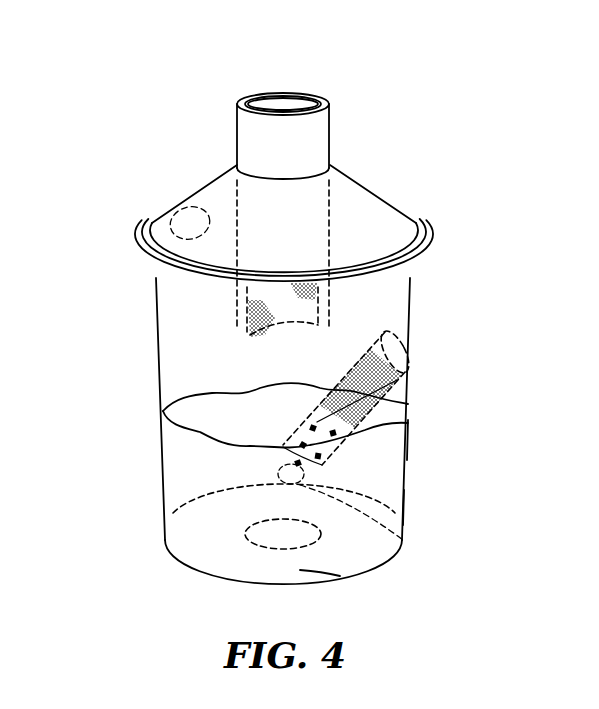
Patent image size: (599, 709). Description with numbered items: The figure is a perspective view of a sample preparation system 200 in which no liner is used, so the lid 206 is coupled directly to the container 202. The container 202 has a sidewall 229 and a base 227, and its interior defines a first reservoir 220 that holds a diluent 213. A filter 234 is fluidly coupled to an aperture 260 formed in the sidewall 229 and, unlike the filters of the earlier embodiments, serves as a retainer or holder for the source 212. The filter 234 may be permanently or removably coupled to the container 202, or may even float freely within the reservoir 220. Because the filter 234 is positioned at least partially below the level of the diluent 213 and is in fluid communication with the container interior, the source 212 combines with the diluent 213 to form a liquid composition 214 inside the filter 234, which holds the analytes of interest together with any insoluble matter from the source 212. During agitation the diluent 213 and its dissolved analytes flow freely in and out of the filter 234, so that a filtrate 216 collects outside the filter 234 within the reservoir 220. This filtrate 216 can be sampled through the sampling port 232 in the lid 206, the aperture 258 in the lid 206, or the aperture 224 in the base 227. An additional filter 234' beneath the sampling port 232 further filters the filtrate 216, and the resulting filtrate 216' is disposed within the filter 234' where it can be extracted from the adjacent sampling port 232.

The sample preparation system 200 is at (472, 89).
The container 202 is at (134, 304).
The lid 206 is at (428, 171).
The source 212 is at (300, 447).
The diluent 213 is at (396, 443).
The liquid composition 214 is at (313, 473).
The filtrate 216 is at (246, 433).
The filtrate 216' is at (399, 242).
The first reservoir 220 is at (372, 308).
The aperture 224 is at (248, 537).
The base 227 is at (343, 577).
The sidewall 229 is at (403, 507).
The sampling port 232 is at (328, 133).
The filter 234 is at (383, 398).
The additional filter 234' is at (206, 323).
The aperture 258 is at (180, 204).
The aperture 260 is at (405, 338).